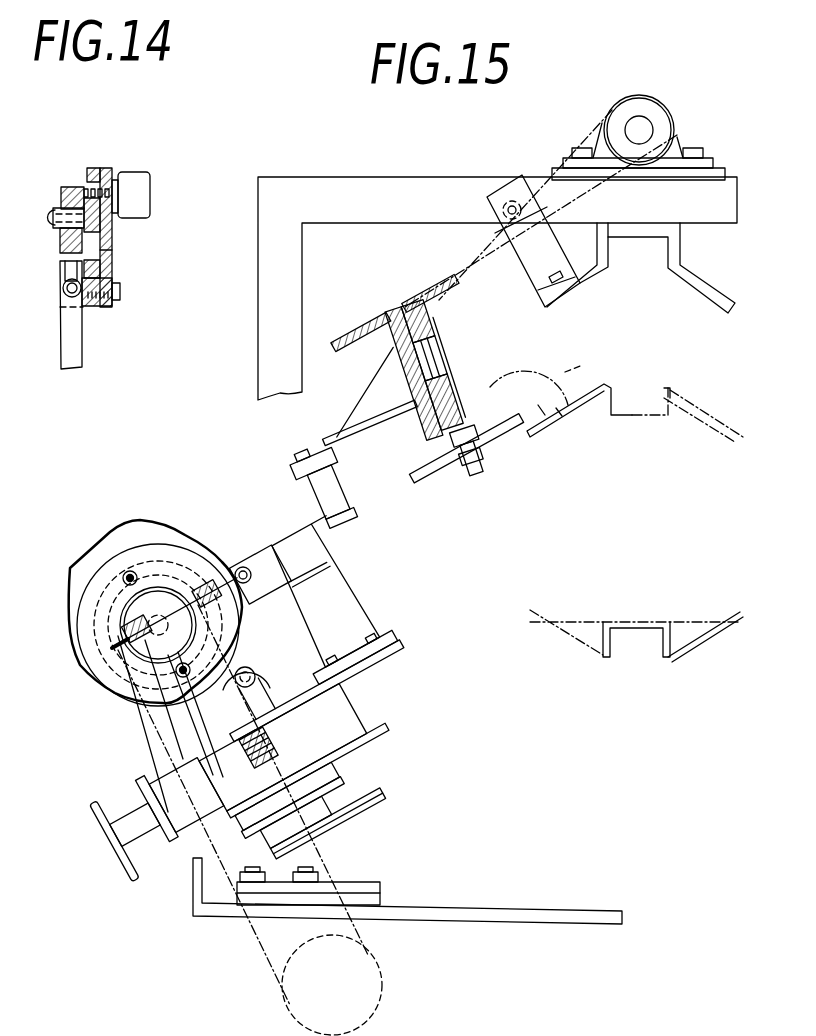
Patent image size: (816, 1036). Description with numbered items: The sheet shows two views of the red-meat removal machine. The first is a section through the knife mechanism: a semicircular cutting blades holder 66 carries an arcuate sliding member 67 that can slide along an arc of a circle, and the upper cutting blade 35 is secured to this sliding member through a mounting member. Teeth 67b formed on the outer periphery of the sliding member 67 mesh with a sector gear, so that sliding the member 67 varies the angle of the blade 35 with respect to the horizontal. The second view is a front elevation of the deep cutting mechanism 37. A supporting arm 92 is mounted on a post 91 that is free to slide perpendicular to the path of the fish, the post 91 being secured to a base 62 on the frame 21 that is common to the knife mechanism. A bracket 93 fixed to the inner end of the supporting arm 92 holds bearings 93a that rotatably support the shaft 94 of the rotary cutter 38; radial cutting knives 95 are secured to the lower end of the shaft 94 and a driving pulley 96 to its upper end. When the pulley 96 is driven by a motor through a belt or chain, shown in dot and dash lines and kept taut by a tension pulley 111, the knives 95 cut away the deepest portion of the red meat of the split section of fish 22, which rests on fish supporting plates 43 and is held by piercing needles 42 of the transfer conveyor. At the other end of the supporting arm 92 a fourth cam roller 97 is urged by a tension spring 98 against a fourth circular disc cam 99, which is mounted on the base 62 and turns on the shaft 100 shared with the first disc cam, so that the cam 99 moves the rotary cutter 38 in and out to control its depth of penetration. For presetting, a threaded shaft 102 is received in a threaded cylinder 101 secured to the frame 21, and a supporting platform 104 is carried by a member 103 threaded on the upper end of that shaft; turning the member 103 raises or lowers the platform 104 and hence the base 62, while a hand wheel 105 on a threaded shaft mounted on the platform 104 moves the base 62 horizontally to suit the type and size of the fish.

In FIG. 14, the semicircular cutting blades holder 66 is at (63, 187).
In FIG. 14, the arcuate sliding member 67 is at (103, 168).
In FIG. 14, the teeth 67b is at (112, 262).
In FIG. 14, the upper cutting blade 35 is at (77, 350).
In FIG. 15, the driving pulley 96 is at (366, 322).
In FIG. 15, the bracket 93 is at (347, 440).
In FIG. 15, the bearings 93a is at (432, 335).
In FIG. 15, the shaft 94 is at (450, 383).
In FIG. 15, the radial cutting knives 95 is at (482, 452).
In FIG. 15, the rotary cutter 38 is at (436, 452).
In FIG. 15, the fish 22 is at (533, 378).
In FIG. 15, the piercing needles 42 is at (573, 370).
In FIG. 15, the fish supporting plates 43 is at (593, 405).
In FIG. 15, the shaft 100 is at (158, 620).
In FIG. 15, the deep cutting mechanism 37 is at (193, 537).
In FIG. 15, the fourth circular disc cam 99 is at (70, 570).
In FIG. 15, the tension spring 98 is at (112, 637).
In FIG. 15, the fourth cam roller 97 is at (245, 567).
In FIG. 15, the tension pulley 111 is at (258, 652).
In FIG. 15, the supporting arm 92 is at (347, 523).
In FIG. 15, the post 91 is at (352, 600).
In FIG. 15, the base 62 is at (398, 648).
In FIG. 15, the supporting platform 104 is at (387, 732).
In FIG. 15, the member 103 is at (330, 777).
In FIG. 15, the threaded shaft 102 is at (340, 813).
In FIG. 15, the threaded cylinder 101 is at (378, 870).
In FIG. 15, the hand wheel 105 is at (137, 877).
In FIG. 15, the frame 21 is at (400, 913).